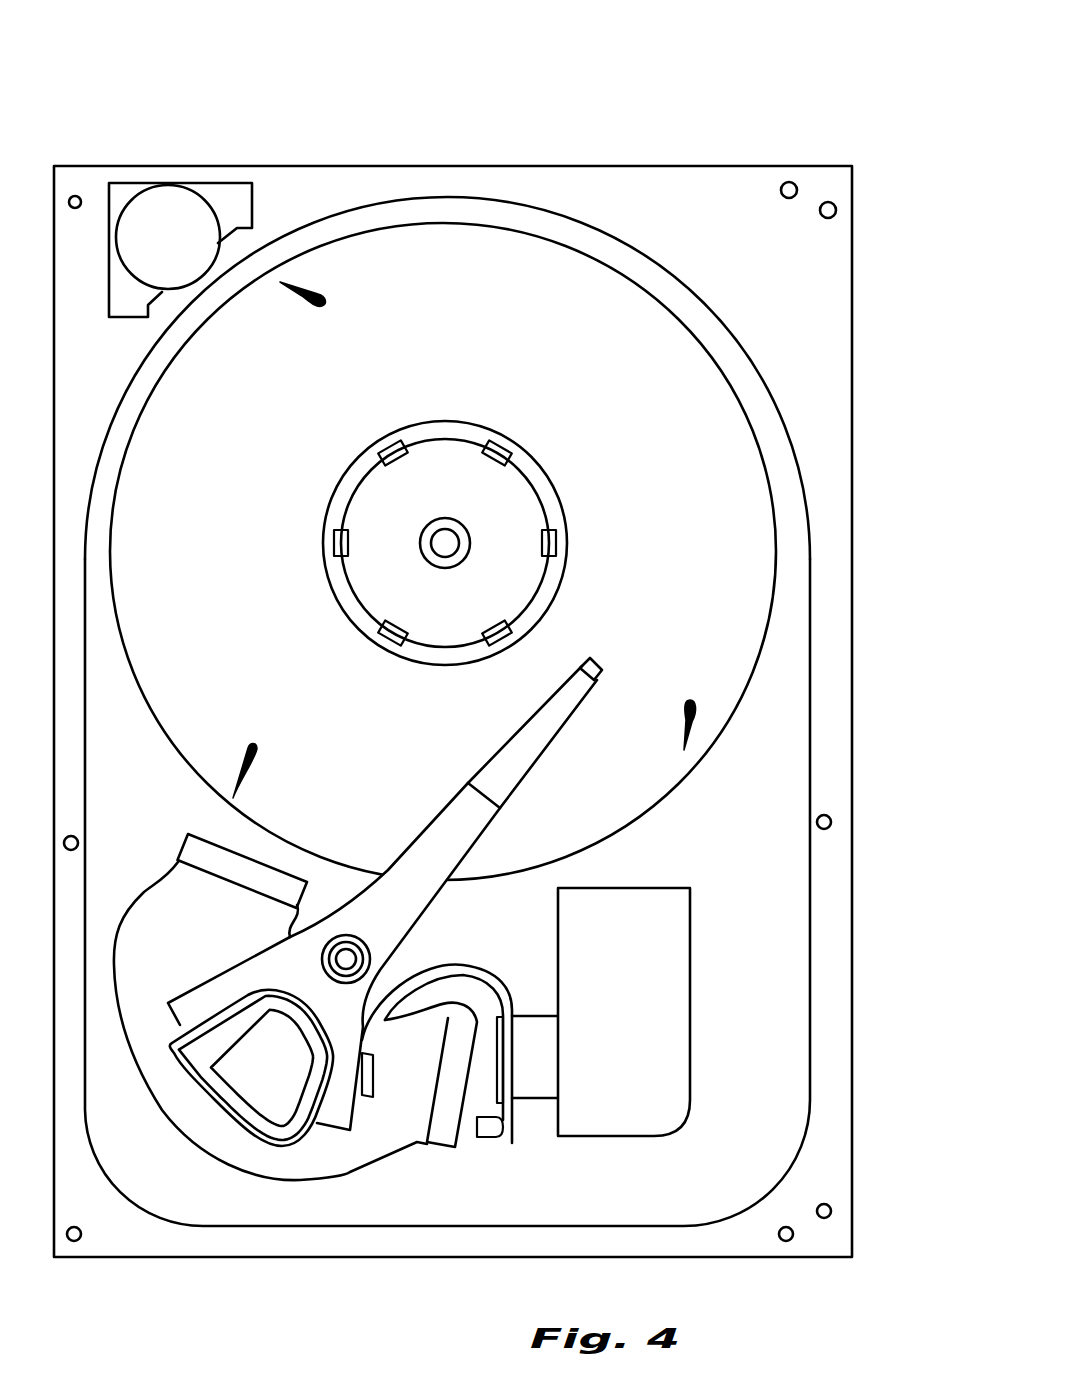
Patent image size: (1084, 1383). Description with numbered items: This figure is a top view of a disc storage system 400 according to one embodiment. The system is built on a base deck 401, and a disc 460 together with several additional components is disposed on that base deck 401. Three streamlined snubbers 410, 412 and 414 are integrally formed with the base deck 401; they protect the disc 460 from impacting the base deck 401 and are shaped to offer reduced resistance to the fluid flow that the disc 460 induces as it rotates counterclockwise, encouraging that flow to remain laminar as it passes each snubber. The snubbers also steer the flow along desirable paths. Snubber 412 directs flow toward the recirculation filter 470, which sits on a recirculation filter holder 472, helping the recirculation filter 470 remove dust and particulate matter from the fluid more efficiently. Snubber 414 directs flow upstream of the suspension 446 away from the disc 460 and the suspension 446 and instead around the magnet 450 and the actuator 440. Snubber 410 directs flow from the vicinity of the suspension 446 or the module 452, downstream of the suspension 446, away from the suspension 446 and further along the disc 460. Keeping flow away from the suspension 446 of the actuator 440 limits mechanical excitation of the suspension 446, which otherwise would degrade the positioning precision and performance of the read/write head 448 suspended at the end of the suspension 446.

The disc storage system 400 is at (246, 134).
The base deck 401 is at (856, 266).
The snubber 410 is at (693, 730).
The snubber 412 is at (283, 288).
The snubber 414 is at (256, 755).
The actuator 440 is at (203, 980).
The suspension 446 is at (547, 735).
The read/write head 448 is at (597, 670).
The magnet 450 is at (142, 896).
The module 452 is at (690, 913).
The disc 460 is at (782, 496).
The recirculation filter 470 is at (212, 205).
The recirculation filter holder 472 is at (255, 200).